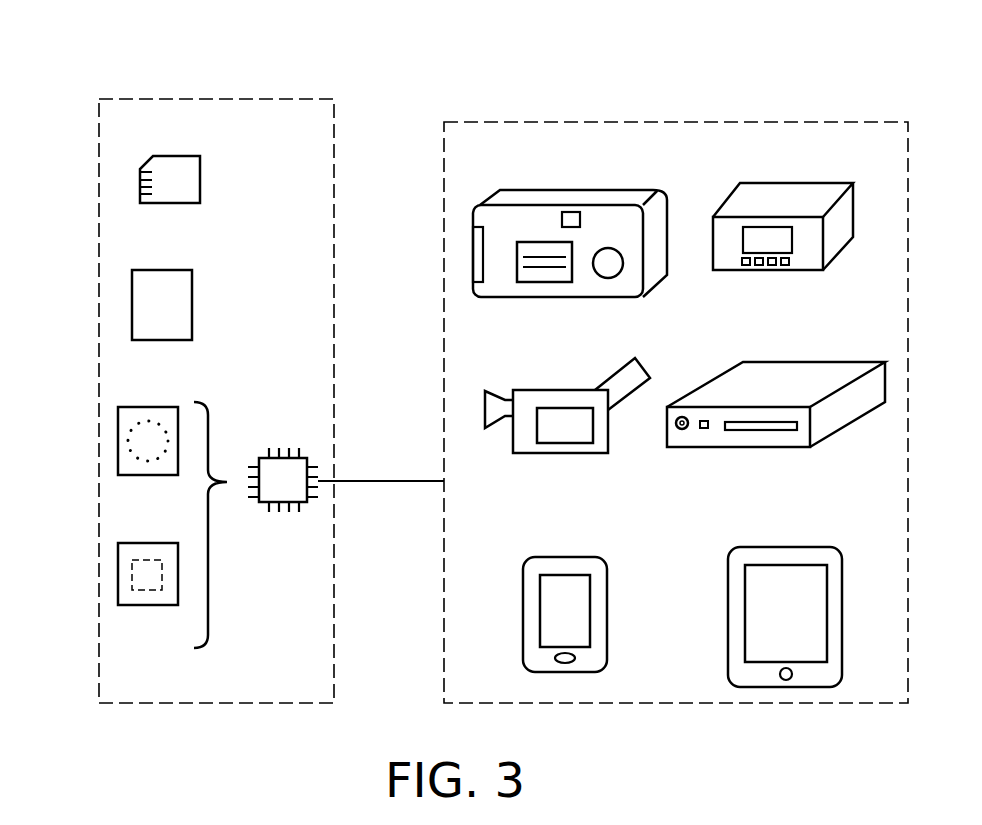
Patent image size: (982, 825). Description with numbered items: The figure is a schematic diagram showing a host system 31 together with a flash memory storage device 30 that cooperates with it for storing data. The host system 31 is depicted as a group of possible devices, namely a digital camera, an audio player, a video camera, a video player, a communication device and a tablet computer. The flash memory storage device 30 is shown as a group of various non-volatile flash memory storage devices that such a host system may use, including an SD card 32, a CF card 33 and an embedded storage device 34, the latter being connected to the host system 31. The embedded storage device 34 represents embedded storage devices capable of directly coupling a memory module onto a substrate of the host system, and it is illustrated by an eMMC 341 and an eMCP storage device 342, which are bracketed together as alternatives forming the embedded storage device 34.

The flash memory storage device 30 is at (205, 99).
The host system 31 is at (603, 122).
The SD card 32 is at (140, 183).
The CF card 33 is at (132, 305).
The embedded storage device 34 is at (283, 458).
The eMMC 341 is at (118, 442).
The eMCP storage device 342 is at (118, 575).